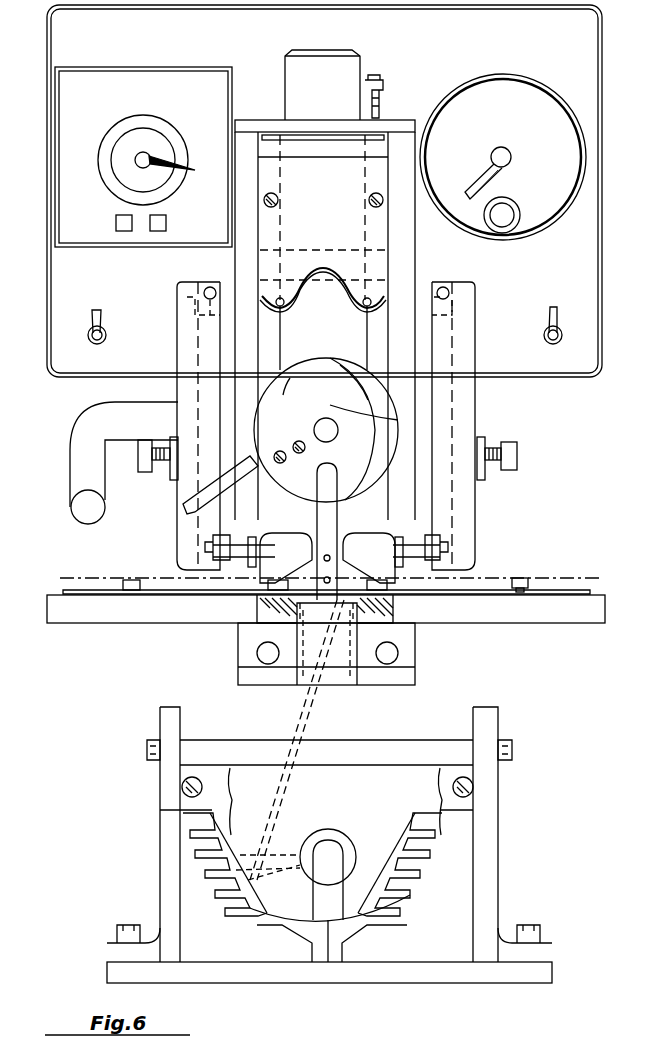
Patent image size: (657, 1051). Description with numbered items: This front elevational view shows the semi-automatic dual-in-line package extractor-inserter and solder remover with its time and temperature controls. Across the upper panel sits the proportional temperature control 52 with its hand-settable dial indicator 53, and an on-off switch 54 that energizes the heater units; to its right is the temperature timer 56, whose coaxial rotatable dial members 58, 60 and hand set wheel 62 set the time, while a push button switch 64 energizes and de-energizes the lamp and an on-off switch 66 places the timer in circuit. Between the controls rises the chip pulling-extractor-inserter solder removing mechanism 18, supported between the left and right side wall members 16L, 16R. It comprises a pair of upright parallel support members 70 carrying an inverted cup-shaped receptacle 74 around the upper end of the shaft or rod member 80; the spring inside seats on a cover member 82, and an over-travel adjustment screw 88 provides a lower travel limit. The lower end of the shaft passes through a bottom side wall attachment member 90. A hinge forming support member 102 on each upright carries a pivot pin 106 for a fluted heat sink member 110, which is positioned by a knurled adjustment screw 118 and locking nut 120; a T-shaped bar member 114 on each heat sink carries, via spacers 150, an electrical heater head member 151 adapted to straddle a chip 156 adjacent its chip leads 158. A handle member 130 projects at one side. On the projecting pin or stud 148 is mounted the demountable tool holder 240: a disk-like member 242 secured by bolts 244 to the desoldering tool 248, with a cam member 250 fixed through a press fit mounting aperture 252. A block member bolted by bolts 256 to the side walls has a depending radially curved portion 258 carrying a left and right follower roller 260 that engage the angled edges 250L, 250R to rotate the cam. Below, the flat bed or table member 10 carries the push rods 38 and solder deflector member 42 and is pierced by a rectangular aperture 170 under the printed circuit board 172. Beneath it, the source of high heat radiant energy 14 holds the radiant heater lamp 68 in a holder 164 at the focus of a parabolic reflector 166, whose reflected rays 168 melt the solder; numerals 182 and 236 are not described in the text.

The flat bed or table member 10 is at (578, 610).
The source of high heat radiant energy 14 is at (508, 879).
The left side wall member 16L is at (282, 328).
The right side wall member 16R is at (367, 330).
The chip pulling-extractor-inserter solder removing mechanism 18 is at (648, 655).
The push rods 38 is at (268, 655).
The solder deflector member 42 is at (240, 640).
The proportional temperature control 52 is at (130, 68).
The dial indicator 53 is at (160, 158).
The on-off switch 54 is at (95, 310).
The temperature timer 56 is at (535, 80).
The rotatable dial member 58 is at (496, 172).
The rotatable dial member 60 is at (466, 180).
The hand set wheel 62 is at (512, 220).
The push button switch 64 is at (504, 222).
The on-off switch 66 is at (556, 307).
The radiant heater lamp 68 is at (318, 838).
The upright support members 70 is at (243, 126).
The inverted cup-shaped receptacle 74 is at (288, 70).
The shaft or rod member 80 is at (339, 518).
The cover member 82 is at (383, 132).
The over-travel adjustment screw 88 is at (377, 78).
The bottom side wall attachment member 90 is at (385, 500).
The hinge forming support member 102 is at (228, 282).
The pivot pin 106 is at (204, 291).
The fluted heat sink member 110 is at (185, 526).
The T-shaped bar member 114 is at (210, 548).
The knurled adjustment screw 118 is at (145, 462).
The locking nut 120 is at (485, 470).
The handle member 130 is at (82, 445).
The projecting pin or stud 148 is at (316, 428).
The spacers 150 is at (235, 585).
The electrical heater head member 151 is at (265, 590).
The chip 156 is at (522, 578).
The chip leads 158 is at (528, 590).
The holder 164 is at (335, 905).
The parabolic reflector 166 is at (262, 918).
The reflected rays 168 is at (290, 716).
The rectangular aperture 170 is at (357, 625).
The printed circuit board 172 is at (80, 590).
The support 182 is at (643, 690).
The member 236 is at (641, 409).
The demountable tool holder 240 is at (410, 437).
The disk-like member 242 is at (400, 420).
The bolts 244 is at (299, 453).
The desoldering tool 248 is at (190, 506).
The cam member 250 is at (320, 395).
The left angled edge of cam 250L is at (298, 378).
The right angled edge of cam 250R is at (410, 468).
The press fit mounting aperture 252 is at (340, 408).
The bolts 256 is at (368, 200).
The depending radially curved portion 258 is at (327, 268).
The follower roller 260 is at (325, 278).